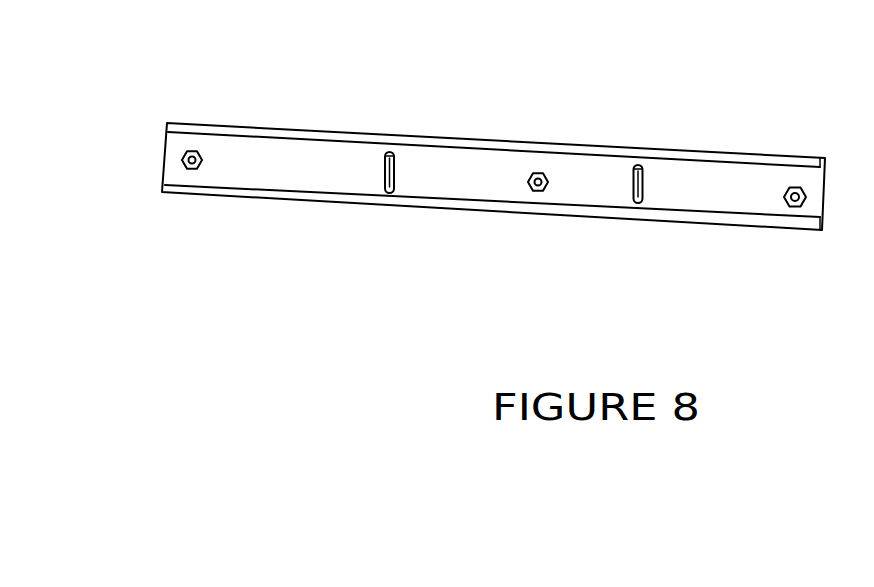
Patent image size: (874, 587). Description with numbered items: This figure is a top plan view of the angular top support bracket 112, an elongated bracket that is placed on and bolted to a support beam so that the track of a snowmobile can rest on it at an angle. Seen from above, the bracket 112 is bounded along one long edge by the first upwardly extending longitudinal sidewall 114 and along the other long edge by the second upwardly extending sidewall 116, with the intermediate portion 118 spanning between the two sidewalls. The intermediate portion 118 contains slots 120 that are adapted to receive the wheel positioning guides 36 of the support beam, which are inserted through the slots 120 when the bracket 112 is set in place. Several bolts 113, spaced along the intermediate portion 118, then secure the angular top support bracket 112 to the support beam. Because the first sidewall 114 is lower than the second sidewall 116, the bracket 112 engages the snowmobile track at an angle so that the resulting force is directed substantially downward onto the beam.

The wheel positioning guides 36 is at (395, 157).
The angular top support bracket 112 is at (436, 162).
The bolts 113 is at (192, 150).
The first upwardly extending longitudinal sidewall 114 is at (612, 147).
The second upwardly extending sidewall 116 is at (453, 207).
The intermediate portion 118 is at (514, 177).
The slots 120 is at (384, 168).